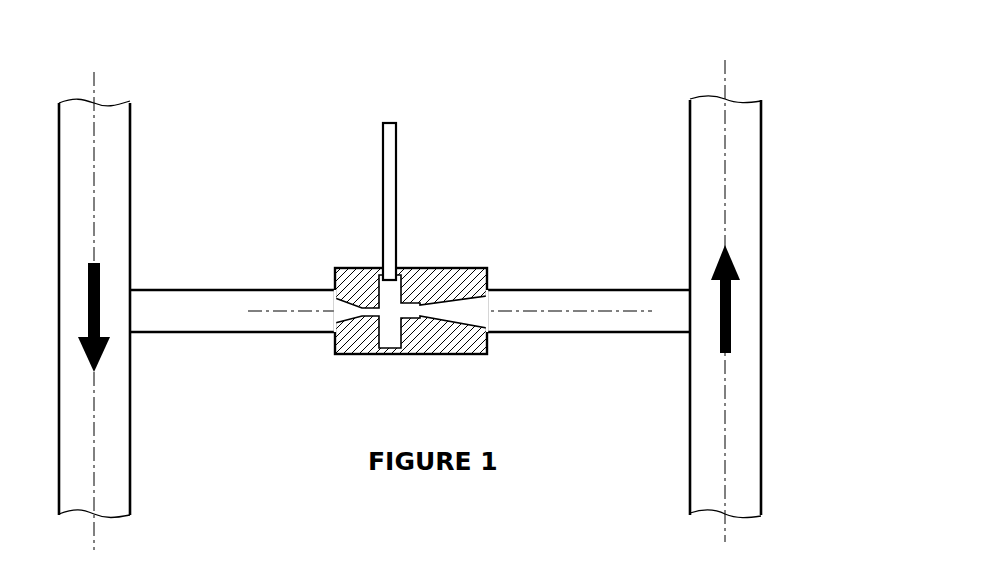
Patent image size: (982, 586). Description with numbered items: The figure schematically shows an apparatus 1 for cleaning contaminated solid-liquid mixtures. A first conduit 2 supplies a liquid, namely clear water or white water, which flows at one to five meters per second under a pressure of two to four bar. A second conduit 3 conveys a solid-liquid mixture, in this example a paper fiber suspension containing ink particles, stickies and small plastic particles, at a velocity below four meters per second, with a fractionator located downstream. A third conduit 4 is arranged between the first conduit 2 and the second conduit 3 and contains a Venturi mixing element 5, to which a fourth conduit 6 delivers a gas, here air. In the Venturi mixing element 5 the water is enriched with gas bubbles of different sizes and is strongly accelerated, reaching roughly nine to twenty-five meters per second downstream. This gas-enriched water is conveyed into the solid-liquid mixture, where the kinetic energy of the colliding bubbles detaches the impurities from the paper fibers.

The apparatus 1 is at (455, 275).
The first conduit 2 is at (130, 160).
The second conduit 3 is at (762, 142).
The third conduit 4 is at (243, 288).
The Venturi mixing element 5 is at (448, 266).
The fourth conduit 6 is at (396, 160).